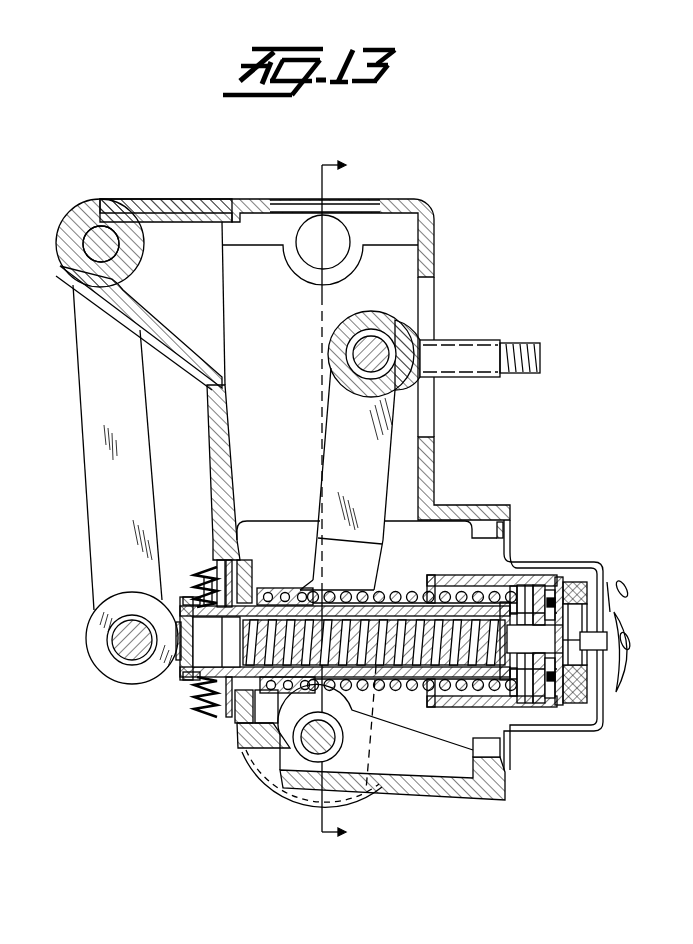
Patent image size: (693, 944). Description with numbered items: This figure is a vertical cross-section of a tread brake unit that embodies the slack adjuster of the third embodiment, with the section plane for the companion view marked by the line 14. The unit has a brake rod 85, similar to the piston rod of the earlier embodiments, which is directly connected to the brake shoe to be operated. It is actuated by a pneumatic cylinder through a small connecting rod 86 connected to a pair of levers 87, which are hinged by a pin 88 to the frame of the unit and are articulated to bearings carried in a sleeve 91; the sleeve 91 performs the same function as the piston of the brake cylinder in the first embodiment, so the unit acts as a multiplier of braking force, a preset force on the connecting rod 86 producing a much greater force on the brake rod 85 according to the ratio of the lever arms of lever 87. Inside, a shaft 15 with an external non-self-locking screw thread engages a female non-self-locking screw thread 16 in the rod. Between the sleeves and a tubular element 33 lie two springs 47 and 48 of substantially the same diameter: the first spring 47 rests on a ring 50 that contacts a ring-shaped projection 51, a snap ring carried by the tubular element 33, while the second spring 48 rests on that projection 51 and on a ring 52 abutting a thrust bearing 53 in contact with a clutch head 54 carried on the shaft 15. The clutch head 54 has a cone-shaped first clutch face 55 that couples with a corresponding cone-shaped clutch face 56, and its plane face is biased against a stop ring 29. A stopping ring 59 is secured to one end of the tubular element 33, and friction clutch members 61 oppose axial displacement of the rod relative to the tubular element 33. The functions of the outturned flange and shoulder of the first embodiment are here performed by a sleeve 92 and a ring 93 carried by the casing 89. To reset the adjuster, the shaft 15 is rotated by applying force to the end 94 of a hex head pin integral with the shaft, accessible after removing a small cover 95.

The section line 14- 14 is at (349, 500).
The screw-threaded shaft 15 is at (380, 667).
The female non-self-locking screw thread 16 is at (455, 678).
The stop ring 29 is at (565, 580).
The tubular element 33 is at (486, 680).
The first spring 47 is at (347, 595).
The second spring 48 is at (446, 592).
The ring 50 is at (420, 592).
The ring-shaped projection 51 is at (433, 690).
The ring 52 is at (548, 592).
The thrust bearing 53 is at (547, 665).
The clutch head 54 is at (580, 672).
The first clutch face 55 is at (575, 661).
The clutch face 56 is at (570, 608).
The stopping ring 59 is at (543, 639).
The friction clutch members 61 is at (207, 695).
The brake rod 85 is at (123, 673).
The small connecting rod 86 is at (476, 356).
The levers 87 is at (345, 454).
The pin 88 is at (313, 740).
The casing 89 is at (410, 782).
The sleeve 91 is at (523, 586).
The sleeve 92 is at (237, 737).
The ring 93 is at (255, 588).
The end of hex head pin 94 is at (586, 645).
The small cover 95 is at (611, 690).